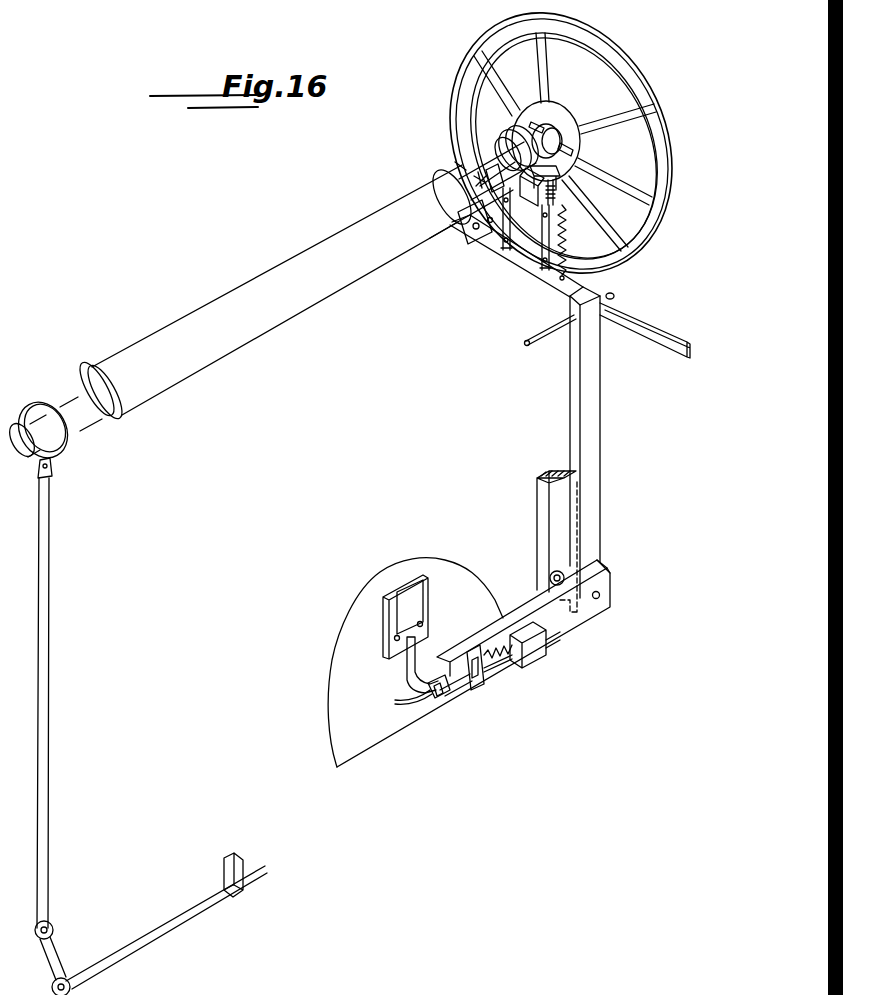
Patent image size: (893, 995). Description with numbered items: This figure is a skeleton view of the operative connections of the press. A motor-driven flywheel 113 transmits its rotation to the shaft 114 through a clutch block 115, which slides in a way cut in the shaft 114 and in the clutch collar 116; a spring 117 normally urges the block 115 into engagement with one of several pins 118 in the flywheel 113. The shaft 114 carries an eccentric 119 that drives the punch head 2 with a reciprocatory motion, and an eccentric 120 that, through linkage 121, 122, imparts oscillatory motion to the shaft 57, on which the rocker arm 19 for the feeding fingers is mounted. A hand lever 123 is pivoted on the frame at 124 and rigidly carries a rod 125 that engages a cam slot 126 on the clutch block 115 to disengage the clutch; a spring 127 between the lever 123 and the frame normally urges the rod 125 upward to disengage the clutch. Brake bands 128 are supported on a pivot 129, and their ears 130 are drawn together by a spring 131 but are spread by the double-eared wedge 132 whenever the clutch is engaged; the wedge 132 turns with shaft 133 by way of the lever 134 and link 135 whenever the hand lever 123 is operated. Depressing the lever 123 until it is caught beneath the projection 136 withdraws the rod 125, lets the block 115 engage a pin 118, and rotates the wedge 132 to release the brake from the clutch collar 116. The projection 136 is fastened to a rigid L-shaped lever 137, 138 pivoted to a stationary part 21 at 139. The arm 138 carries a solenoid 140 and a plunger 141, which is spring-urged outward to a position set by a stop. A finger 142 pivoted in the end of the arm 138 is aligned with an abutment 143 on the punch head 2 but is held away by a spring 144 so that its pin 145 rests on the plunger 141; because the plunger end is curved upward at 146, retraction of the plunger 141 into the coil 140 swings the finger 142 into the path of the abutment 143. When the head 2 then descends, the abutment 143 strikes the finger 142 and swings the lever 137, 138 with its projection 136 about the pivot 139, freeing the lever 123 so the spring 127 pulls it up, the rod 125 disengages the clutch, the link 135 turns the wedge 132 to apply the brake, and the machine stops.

The punch head 2 is at (338, 652).
The rocker arm 19 is at (224, 876).
The stationary part 21 is at (540, 526).
The shaft 57 is at (115, 960).
The flywheel 113 is at (625, 100).
The shaft 114 is at (477, 230).
The clutch block 115 is at (505, 165).
The clutch collar 116 is at (507, 139).
The spring 117 is at (480, 175).
The pins 118 is at (549, 127).
The eccentric 119 is at (355, 268).
The eccentric 120 is at (58, 438).
The linkage 121 is at (48, 746).
The linkage 122 is at (56, 958).
The hand lever 123 is at (650, 318).
The pivot 124 is at (470, 232).
The rod 125 is at (490, 224).
The cam slot 126 is at (458, 163).
The spring 127 is at (572, 222).
The brake bands 128 is at (510, 110).
The pivot 129 is at (500, 137).
The ears 130 is at (538, 187).
The spring 131 is at (568, 203).
The double-eared wedge 132 is at (558, 169).
The shaft 133 is at (483, 193).
The lever 134 is at (517, 235).
The link 135 is at (545, 257).
The projection 136 is at (612, 297).
The L-shaped lever 137 is at (598, 505).
The arm 138 is at (564, 614).
The pivot 139 is at (600, 595).
The solenoid 140 is at (540, 649).
The plunger 141 is at (514, 665).
The finger 142 is at (407, 666).
The abutment 143 is at (405, 602).
The spring 144 is at (437, 695).
The pin 145 is at (440, 698).
The curved end 146 is at (405, 705).